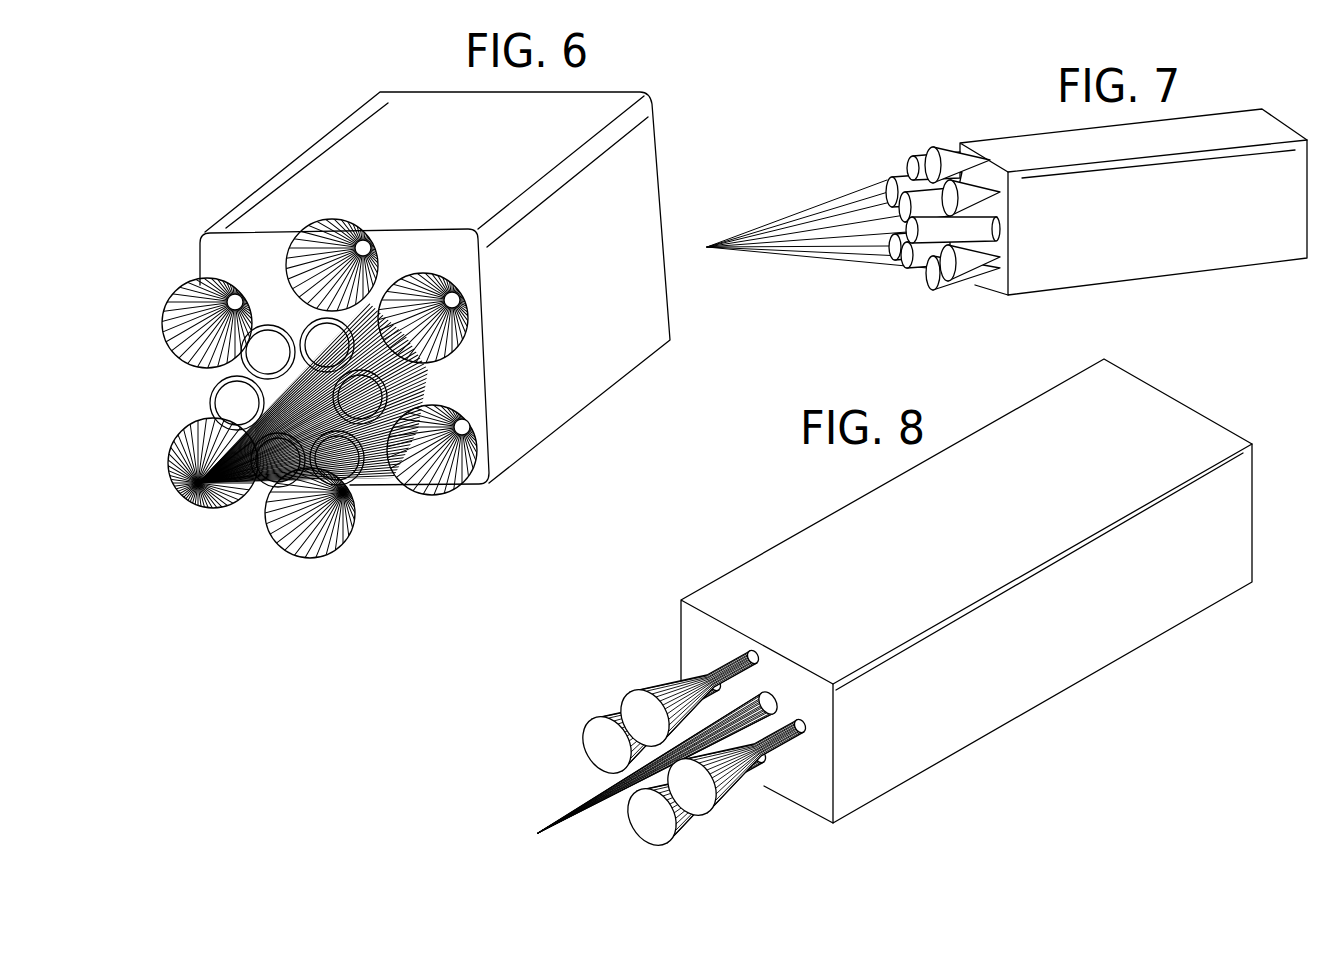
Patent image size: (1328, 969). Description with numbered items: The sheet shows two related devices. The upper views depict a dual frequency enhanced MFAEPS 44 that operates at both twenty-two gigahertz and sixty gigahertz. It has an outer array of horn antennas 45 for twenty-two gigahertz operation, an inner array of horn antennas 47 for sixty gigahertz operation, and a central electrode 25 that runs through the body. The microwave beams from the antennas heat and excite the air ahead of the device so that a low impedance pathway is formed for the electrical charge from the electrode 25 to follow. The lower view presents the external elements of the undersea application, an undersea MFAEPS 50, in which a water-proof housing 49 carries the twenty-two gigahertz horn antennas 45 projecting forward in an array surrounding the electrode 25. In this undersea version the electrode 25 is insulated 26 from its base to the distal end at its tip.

In FIG. 6, the central electrode 25 is at (205, 431).
In FIG. 7, the central electrode 25 is at (793, 224).
In FIG. 8, the central electrode 25 is at (580, 797).
In FIG. 8, the insulation 26 is at (622, 803).
In FIG. 6, the dual frequency enhanced MFAEPS 44 is at (634, 398).
In FIG. 7, the dual frequency enhanced MFAEPS 44 is at (1216, 289).
In FIG. 6, the horn antennas 45 is at (193, 280).
In FIG. 7, the horn antennas 45 is at (972, 282).
In FIG. 8, the horn antennas 45 is at (632, 694).
In FIG. 6, the inner array of horn antennas 47 is at (420, 388).
In FIG. 7, the inner array of horn antennas 47 is at (900, 176).
In FIG. 8, the water-proof housing 49 is at (826, 558).
In FIG. 8, the undersea MFAEPS 50 is at (1005, 752).